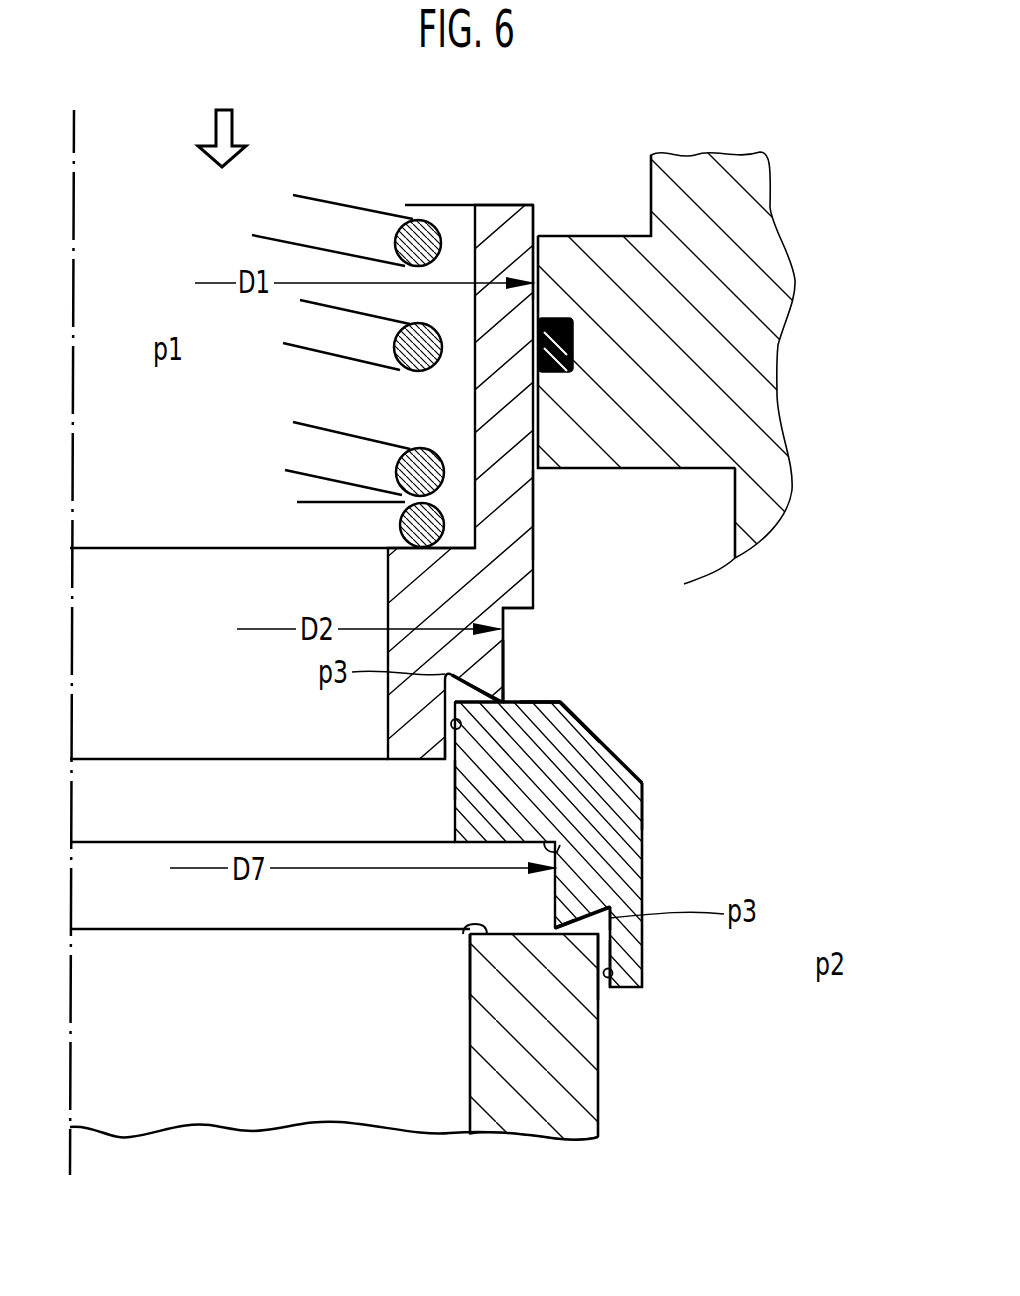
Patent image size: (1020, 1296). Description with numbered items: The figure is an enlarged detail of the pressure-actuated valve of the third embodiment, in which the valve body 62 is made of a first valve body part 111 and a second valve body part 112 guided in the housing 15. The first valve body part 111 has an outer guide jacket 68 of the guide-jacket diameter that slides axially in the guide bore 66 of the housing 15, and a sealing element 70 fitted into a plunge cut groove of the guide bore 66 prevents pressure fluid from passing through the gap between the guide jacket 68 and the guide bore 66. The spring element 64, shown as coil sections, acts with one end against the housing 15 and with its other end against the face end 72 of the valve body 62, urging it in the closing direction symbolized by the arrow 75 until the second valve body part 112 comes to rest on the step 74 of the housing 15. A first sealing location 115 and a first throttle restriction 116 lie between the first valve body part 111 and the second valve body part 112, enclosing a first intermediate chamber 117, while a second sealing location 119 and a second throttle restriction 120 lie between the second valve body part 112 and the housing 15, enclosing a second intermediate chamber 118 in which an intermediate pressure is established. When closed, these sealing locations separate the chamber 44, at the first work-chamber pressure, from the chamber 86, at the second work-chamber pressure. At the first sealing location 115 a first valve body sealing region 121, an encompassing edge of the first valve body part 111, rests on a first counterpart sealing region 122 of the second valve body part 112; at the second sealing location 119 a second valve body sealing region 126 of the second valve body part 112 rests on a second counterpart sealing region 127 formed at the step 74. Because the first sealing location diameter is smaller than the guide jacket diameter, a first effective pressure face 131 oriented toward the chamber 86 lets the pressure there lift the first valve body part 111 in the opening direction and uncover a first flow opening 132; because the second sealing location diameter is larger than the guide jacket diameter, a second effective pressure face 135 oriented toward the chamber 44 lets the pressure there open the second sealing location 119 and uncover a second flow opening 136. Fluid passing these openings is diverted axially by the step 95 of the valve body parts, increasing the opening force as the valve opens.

The housing 15 is at (750, 237).
The chamber 44 is at (127, 492).
The valve body 62 is at (684, 757).
The spring element 64 is at (425, 222).
The guide bore 66 is at (535, 252).
The guide jacket 68 is at (542, 511).
The sealing element 70 is at (537, 352).
The face end 72 is at (527, 203).
The step 74 is at (464, 929).
The arrow 75 is at (231, 126).
The chamber 86 is at (452, 1077).
The step 95 is at (450, 723).
The first valve body part 111 is at (493, 520).
The second valve body part 112 is at (623, 806).
The first sealing location 115 is at (537, 699).
The first throttle restriction 116 is at (450, 785).
The first intermediate chamber 117 is at (463, 685).
The second intermediate chamber 118 is at (590, 921).
The second sealing location 119 is at (555, 927).
The second throttle restriction 120 is at (613, 1006).
The first valve body sealing region 121 is at (503, 704).
The first counterpart sealing region 122 is at (517, 690).
The second valve body sealing region 126 is at (614, 967).
The second counterpart sealing region 127 is at (557, 925).
The first effective pressure face 131 is at (520, 618).
The first flow opening 132 is at (565, 702).
The second effective pressure face 135 is at (560, 852).
The second flow opening 136 is at (535, 927).